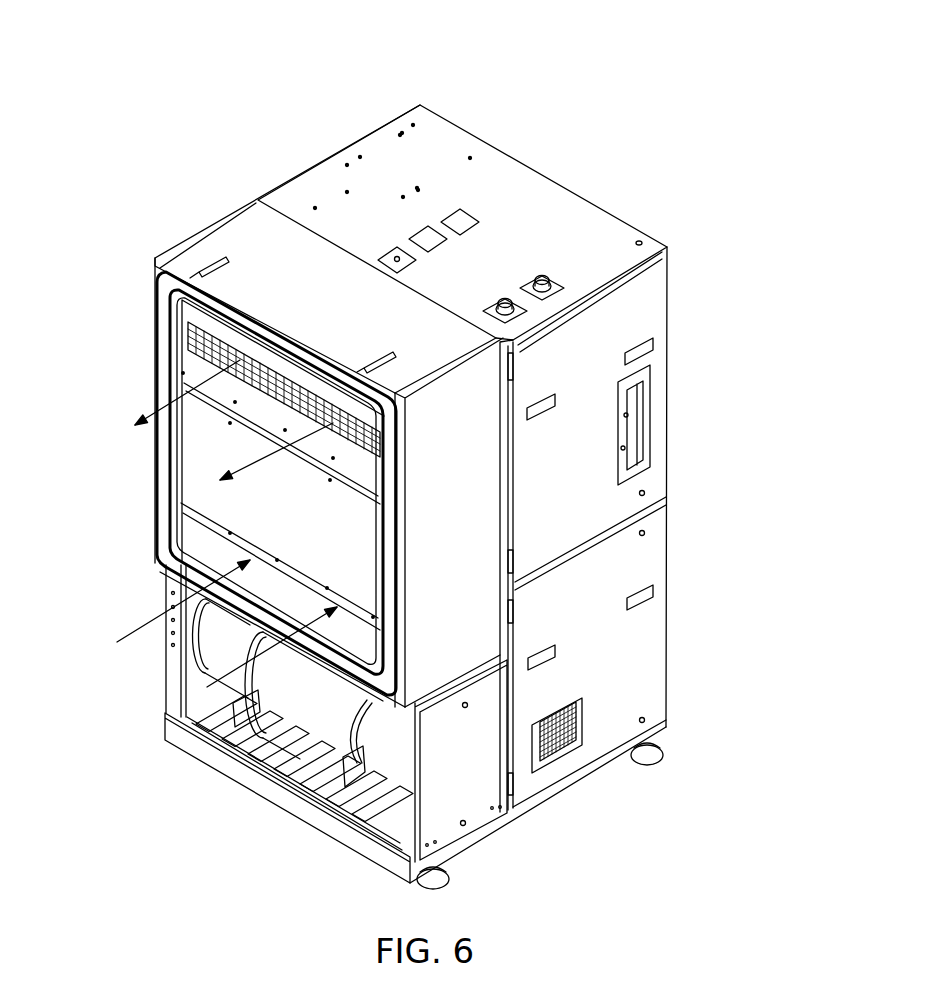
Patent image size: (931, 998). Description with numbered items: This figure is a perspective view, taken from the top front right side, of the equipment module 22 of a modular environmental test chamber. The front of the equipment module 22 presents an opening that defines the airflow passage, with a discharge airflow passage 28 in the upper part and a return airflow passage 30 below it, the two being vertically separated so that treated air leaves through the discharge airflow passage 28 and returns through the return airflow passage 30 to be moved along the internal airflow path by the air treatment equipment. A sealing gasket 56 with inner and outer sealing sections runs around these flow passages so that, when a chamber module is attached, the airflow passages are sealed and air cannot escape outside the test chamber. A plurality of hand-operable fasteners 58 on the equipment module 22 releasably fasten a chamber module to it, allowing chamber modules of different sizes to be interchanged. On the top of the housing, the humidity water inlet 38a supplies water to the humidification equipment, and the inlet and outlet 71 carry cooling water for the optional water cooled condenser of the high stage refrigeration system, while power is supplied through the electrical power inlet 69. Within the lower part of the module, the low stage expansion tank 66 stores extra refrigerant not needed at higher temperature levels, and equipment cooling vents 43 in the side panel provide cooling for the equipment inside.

The equipment module 22 is at (582, 52).
The humidity water inlet 38a is at (403, 250).
The inlet and outlet 71 is at (543, 282).
The electrical power inlet 69 is at (642, 241).
The fasteners 58 is at (205, 268).
The discharge airflow passage 28 is at (207, 360).
The sealing gasket 56 is at (380, 495).
The return airflow passage 30 is at (210, 553).
The low stage expansion tank 66 is at (283, 697).
The equipment cooling vents 43 is at (563, 748).